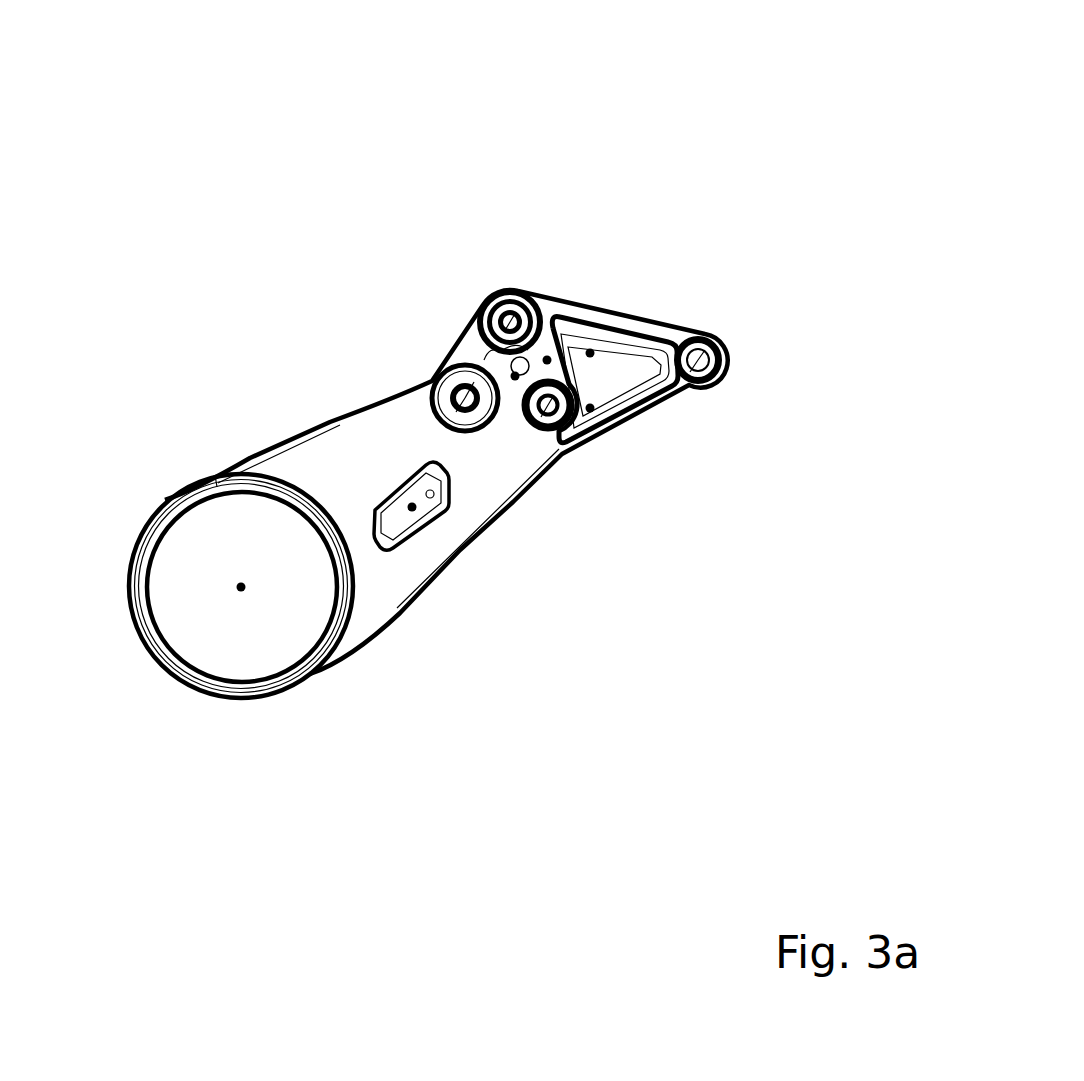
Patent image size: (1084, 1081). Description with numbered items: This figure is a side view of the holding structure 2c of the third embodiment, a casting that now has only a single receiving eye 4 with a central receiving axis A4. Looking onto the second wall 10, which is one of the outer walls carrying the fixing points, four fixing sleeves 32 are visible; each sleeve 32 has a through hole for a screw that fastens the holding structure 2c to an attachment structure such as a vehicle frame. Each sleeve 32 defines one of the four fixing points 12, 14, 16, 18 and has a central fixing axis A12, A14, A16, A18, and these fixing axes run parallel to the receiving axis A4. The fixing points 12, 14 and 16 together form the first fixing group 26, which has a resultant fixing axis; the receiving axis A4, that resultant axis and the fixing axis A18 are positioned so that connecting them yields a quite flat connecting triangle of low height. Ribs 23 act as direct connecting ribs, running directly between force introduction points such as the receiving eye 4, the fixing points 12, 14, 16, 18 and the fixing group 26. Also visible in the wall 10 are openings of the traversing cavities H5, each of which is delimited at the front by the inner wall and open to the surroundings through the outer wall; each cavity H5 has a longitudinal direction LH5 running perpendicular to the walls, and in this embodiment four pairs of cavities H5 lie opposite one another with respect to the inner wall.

The holding structure 2c is at (247, 456).
The receiving eye 4 is at (162, 660).
The receiving axis A4 is at (241, 590).
The second wall 10 is at (397, 577).
The fixing point 12 is at (403, 402).
The fixing axis A12 is at (465, 398).
The fixing point 14 is at (480, 300).
The fixing axis A14 is at (510, 322).
The fixing point 16 is at (523, 425).
The fixing axis A16 is at (547, 408).
The fixing point 18 is at (692, 332).
The fixing axis A18 is at (700, 358).
The rib 23 is at (579, 340).
The first fixing group 26 is at (583, 340).
The fixing sleeve 32 is at (503, 297).
The traversing cavity H5 is at (547, 305).
The longitudinal direction LH5 is at (545, 345).